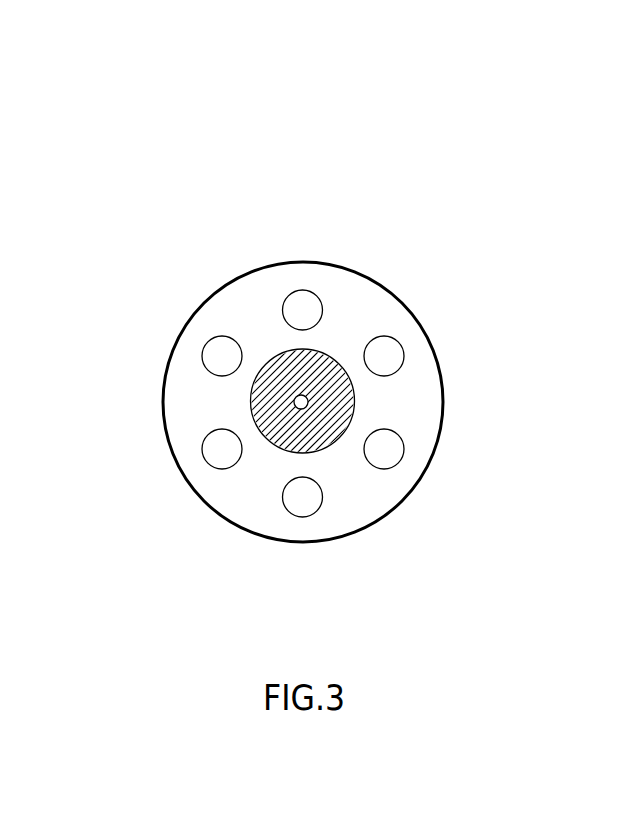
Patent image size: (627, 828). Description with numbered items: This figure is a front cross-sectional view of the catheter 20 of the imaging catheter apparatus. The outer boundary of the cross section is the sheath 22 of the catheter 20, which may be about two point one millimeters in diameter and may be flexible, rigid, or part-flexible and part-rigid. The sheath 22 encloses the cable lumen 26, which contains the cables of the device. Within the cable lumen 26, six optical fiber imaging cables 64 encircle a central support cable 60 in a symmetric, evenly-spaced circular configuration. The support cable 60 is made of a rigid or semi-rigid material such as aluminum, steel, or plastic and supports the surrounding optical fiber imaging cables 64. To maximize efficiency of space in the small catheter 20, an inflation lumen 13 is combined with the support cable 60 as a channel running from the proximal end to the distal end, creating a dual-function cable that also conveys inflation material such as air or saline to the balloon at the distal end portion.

The catheter 20 is at (279, 166).
The sheath 22 is at (378, 276).
The optical fiber imaging cables 64 is at (212, 338).
The support cable 60 is at (294, 402).
The inflation lumen 13 is at (308, 402).
The cable lumen 26 is at (378, 488).